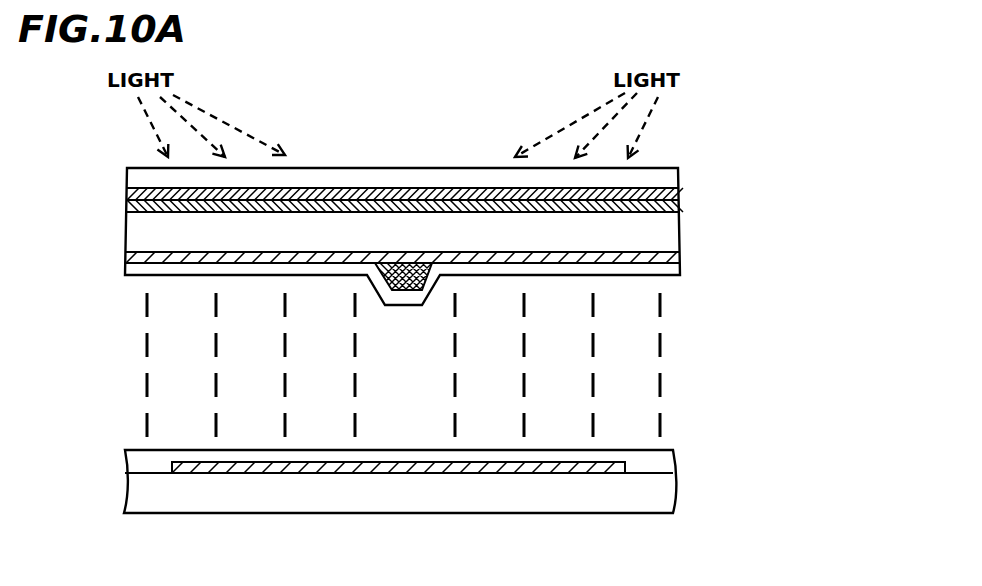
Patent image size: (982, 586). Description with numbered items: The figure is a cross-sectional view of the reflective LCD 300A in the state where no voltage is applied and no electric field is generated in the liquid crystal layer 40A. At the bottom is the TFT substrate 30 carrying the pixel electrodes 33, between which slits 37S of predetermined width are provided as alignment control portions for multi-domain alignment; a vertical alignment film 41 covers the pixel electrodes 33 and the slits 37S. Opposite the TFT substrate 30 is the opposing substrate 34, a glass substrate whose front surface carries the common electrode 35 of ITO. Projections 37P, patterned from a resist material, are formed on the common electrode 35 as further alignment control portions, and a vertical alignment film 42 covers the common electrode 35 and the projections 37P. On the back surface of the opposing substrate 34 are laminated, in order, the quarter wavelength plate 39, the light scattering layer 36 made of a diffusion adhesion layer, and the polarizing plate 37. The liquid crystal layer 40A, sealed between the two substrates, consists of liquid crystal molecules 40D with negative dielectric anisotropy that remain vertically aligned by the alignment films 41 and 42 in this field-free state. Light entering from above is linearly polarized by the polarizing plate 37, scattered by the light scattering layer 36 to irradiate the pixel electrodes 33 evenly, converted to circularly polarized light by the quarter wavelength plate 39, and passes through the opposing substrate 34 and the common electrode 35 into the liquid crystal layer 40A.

The reflective LCD 300A is at (693, 107).
The polarizing plate 37 is at (678, 170).
The light scattering layer 36 is at (679, 189).
The λ/4 wavelength plate 39 is at (679, 206).
The opposing substrate 34 is at (679, 235).
The common electrode 35 is at (680, 257).
The vertical alignment film 42 is at (680, 271).
The projection 37P is at (405, 292).
The liquid crystal layer 40A is at (84, 386).
The liquid crystal molecule 40D is at (146, 298).
The vertical alignment film 41 is at (662, 451).
The pixel electrode 33 is at (625, 463).
The TFT substrate 30 is at (675, 492).
The slit 37S is at (145, 465).